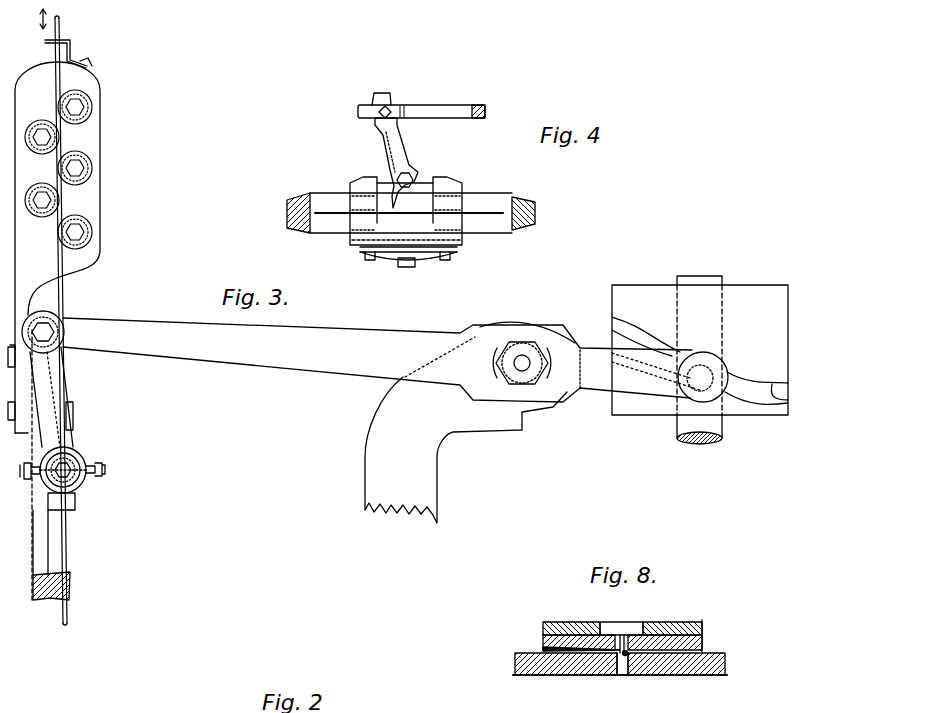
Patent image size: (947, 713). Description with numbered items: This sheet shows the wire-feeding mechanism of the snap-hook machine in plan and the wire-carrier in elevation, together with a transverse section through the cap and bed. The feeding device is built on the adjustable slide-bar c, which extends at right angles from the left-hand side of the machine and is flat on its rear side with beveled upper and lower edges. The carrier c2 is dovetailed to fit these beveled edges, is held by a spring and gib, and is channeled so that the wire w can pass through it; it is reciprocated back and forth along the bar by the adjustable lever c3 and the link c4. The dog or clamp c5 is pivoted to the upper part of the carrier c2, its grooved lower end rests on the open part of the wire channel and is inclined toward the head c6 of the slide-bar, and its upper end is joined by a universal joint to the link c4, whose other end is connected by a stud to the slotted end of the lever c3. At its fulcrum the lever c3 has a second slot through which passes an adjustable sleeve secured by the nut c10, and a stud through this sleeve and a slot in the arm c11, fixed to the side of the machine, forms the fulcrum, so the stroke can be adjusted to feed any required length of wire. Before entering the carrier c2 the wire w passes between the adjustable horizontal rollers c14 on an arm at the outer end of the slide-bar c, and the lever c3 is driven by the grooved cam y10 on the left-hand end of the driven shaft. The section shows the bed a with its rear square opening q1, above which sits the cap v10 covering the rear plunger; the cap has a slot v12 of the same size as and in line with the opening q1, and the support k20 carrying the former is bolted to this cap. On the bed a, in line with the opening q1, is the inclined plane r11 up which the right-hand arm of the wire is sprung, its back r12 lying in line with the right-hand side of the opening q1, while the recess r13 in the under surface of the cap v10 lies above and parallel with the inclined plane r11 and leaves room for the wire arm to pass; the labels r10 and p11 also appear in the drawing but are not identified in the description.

In FIG. 3, the rod w is at (66, 317).
In FIG. 3, the adjustable horizontal rollers c14 is at (58, 169).
In FIG. 3, the link c4 is at (47, 379).
In FIG. 4, the link c4 is at (421, 102).
In FIG. 3, the head of the slide-bar c6 is at (62, 469).
In FIG. 3, the adjustable slide-bar c is at (52, 546).
In FIG. 3, the adjustable lever c3 is at (377, 414).
In FIG. 3, the nut c10 is at (525, 368).
In FIG. 3, the arm c11 is at (466, 430).
In FIG. 3, the cam y10 is at (700, 360).
In FIG. 4, the dog or clamp c5 is at (396, 163).
In FIG. 4, the carrier c2 is at (411, 210).
In FIG. 8, the bed a is at (620, 664).
In FIG. 8, the support k20 is at (593, 621).
In FIG. 8, the recess r13 is at (672, 617).
In FIG. 8, the layer r10 is at (581, 643).
In FIG. 8, the inclined plane r11 is at (665, 648).
In FIG. 8, the pin p11 is at (621, 633).
In FIG. 8, the slot v12 is at (628, 645).
In FIG. 8, the cap v10 is at (704, 643).
In FIG. 8, the back of the inclined plane r12 is at (665, 686).
In FIG. 8, the square opening q1 is at (620, 677).